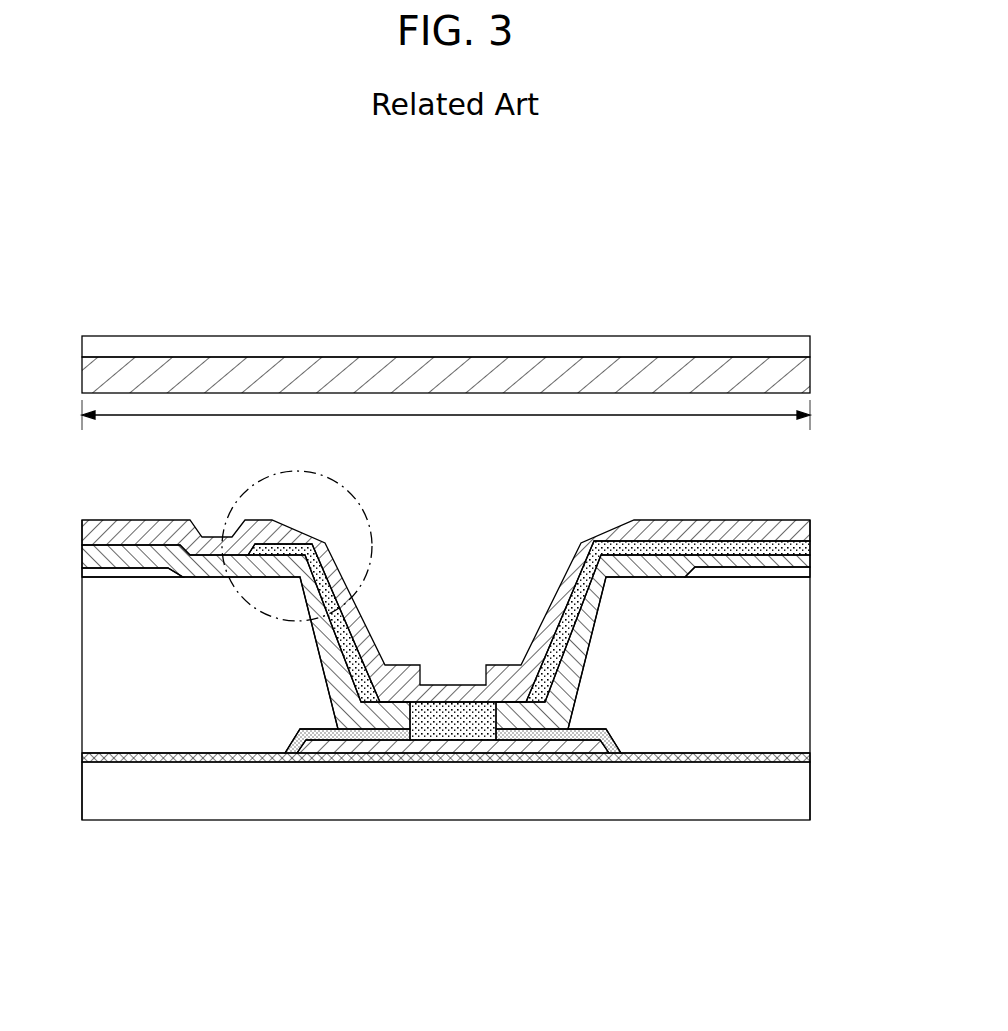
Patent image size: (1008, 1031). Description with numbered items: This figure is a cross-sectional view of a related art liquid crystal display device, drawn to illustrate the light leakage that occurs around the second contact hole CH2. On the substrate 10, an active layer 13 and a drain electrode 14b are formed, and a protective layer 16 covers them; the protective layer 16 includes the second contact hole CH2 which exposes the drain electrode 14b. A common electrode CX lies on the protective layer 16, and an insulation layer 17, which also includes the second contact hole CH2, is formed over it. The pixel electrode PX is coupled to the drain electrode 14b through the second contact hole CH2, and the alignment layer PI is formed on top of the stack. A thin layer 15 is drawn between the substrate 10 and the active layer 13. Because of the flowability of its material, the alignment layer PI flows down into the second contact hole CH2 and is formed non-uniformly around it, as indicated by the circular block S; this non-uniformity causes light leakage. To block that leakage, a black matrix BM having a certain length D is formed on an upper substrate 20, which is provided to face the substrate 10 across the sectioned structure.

The upper substrate 20 is at (812, 354).
The black matrix BM is at (806, 380).
The certain length D is at (446, 422).
The circular block S is at (364, 494).
The second contact hole CH2 is at (454, 616).
The alignment layer PI is at (812, 524).
The pixel electrode PX is at (812, 547).
The insulation layer 17 is at (812, 562).
The common electrode CX is at (812, 574).
The protective layer 16 is at (798, 682).
The gate insulating layer 15 is at (812, 757).
The substrate 10 is at (798, 796).
The drain electrode 14b is at (393, 745).
The active layer 13 is at (490, 745).